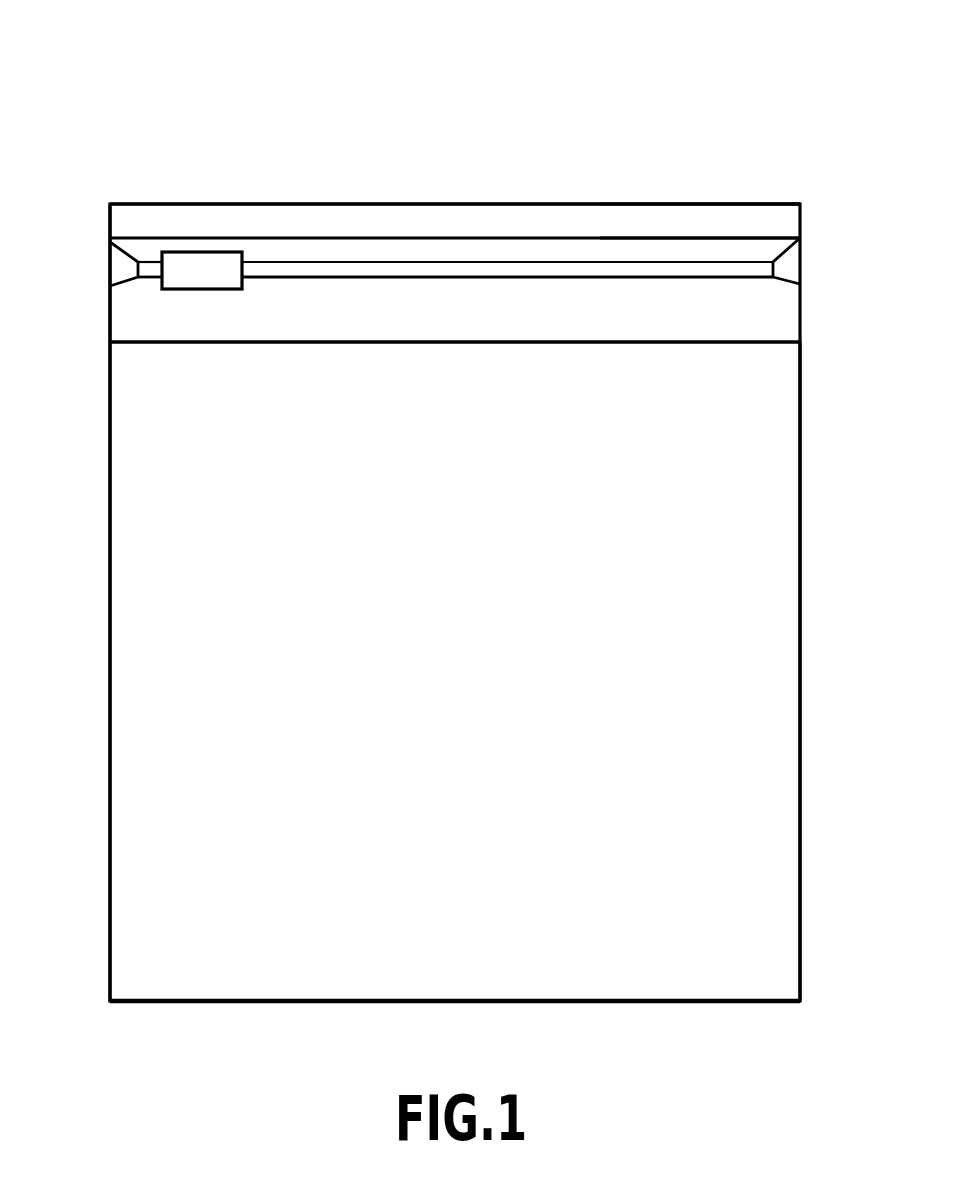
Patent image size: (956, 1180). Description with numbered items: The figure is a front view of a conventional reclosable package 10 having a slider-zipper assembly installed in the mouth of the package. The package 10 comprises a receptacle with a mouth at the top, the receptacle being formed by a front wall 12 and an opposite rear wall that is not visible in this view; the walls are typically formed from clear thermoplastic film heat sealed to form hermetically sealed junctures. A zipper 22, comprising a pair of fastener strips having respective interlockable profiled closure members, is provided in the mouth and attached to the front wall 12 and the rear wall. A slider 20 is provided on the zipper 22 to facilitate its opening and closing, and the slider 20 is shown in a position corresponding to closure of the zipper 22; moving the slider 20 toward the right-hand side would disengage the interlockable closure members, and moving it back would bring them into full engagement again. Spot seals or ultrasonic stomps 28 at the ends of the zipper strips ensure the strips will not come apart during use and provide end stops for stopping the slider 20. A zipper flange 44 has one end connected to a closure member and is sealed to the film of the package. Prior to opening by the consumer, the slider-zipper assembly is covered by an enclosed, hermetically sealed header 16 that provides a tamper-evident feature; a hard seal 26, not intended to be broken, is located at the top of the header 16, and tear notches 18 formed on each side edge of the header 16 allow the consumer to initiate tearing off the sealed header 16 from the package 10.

The reclosable package 10 is at (328, 75).
The front wall 12 is at (437, 593).
The sealed header 16 is at (240, 198).
The tear notches 18 is at (112, 241).
The slider 20 is at (187, 252).
The zipper 22 is at (520, 258).
The hard seal 26 is at (738, 213).
The spot seals or ultrasonic stomps 28 is at (122, 266).
The zipper flange 44 is at (700, 341).